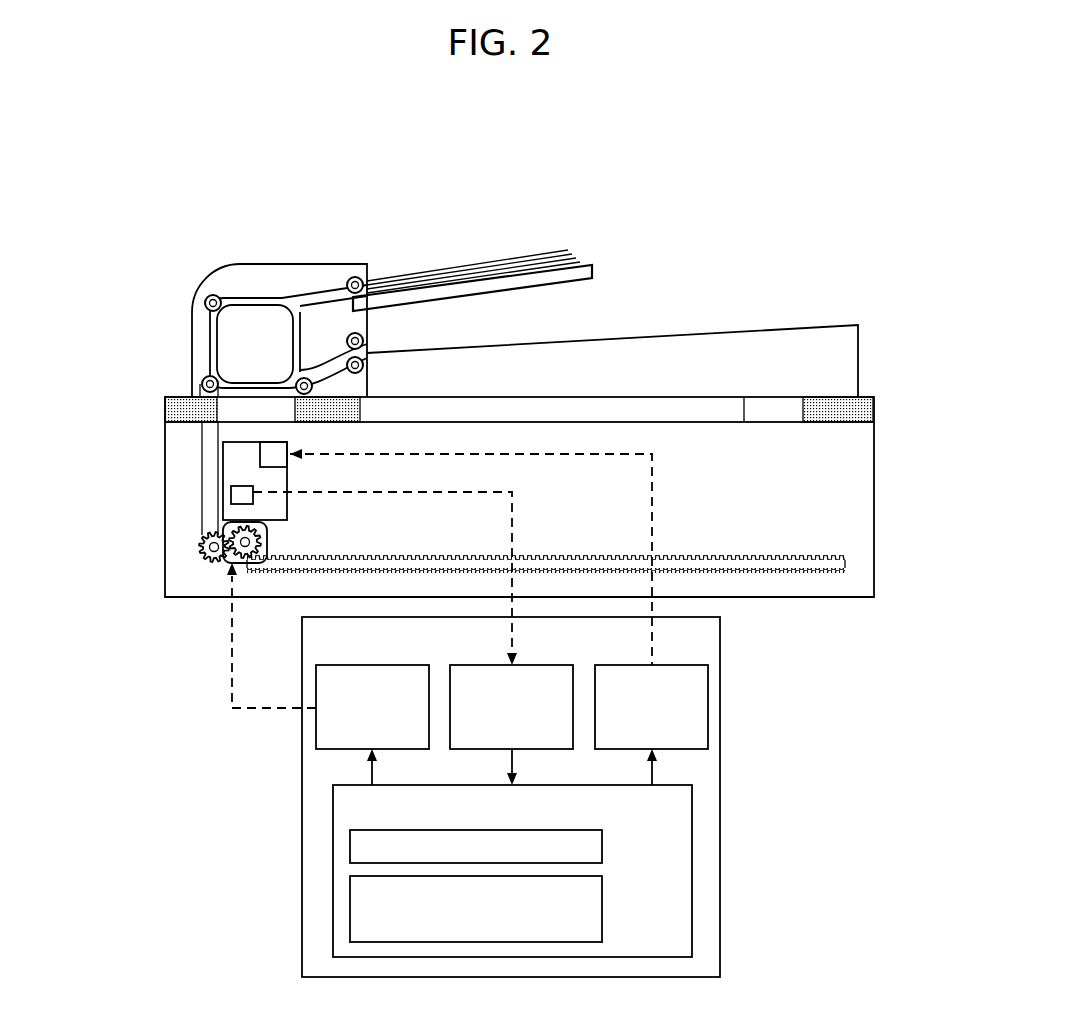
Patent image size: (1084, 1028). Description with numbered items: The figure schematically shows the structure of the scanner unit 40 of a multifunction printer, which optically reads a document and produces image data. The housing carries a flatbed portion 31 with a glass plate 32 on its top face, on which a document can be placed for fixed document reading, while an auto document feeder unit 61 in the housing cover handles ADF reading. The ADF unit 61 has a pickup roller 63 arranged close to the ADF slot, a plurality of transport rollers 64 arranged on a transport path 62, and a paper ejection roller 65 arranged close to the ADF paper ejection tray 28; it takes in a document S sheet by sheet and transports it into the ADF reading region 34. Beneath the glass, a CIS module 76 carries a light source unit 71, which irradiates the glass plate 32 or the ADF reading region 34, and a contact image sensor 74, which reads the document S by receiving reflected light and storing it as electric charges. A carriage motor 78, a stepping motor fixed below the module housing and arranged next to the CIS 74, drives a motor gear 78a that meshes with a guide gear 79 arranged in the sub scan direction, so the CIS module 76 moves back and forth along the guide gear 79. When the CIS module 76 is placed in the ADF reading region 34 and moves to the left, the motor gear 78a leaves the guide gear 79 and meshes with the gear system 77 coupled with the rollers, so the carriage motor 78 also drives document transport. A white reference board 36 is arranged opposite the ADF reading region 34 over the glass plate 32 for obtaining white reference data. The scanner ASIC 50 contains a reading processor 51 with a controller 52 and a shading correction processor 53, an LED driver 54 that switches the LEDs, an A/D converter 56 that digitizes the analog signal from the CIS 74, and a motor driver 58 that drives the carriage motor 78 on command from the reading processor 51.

The scanner unit 40 is at (803, 197).
The ADF paper ejection tray 28 is at (678, 338).
The flatbed portion 31 is at (541, 374).
The glass plate 32 is at (621, 398).
The ADF reading region 34 is at (283, 417).
The white reference board 36 is at (762, 403).
The auto document feeder unit 61 is at (277, 282).
The transport path 62 is at (260, 302).
The pickup roller 63 is at (357, 278).
The transport rollers 64 is at (206, 297).
The paper ejection roller 65 is at (363, 334).
The document S is at (443, 270).
The light source unit 71 is at (275, 453).
The contact image sensor 74 is at (247, 492).
The CIS module 76 is at (257, 442).
The gear system 77 is at (203, 477).
The carriage motor 78 is at (268, 532).
The motor gear 78a is at (266, 541).
The guide gear 79 is at (760, 558).
The scanner ASIC 50 is at (720, 690).
The reading processor 51 is at (692, 820).
The controller 52 is at (602, 847).
The shading correction processor 53 is at (602, 905).
The LED driver 54 is at (665, 663).
The A/D converter 56 is at (540, 663).
The motor driver 58 is at (360, 663).